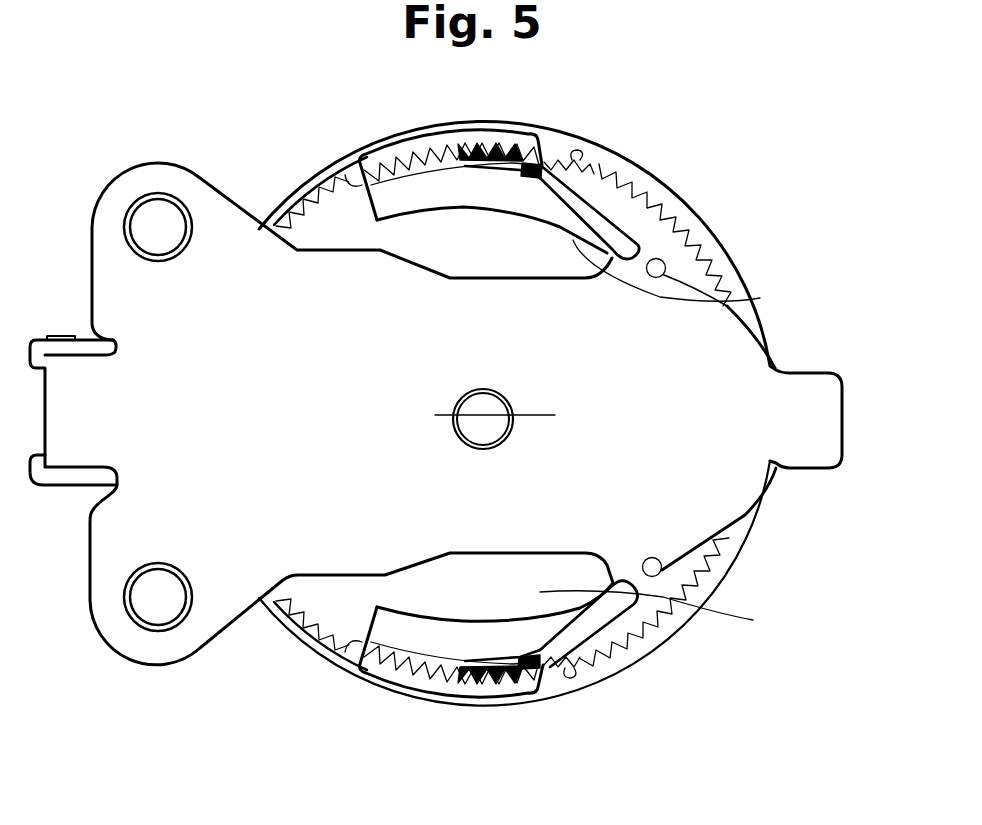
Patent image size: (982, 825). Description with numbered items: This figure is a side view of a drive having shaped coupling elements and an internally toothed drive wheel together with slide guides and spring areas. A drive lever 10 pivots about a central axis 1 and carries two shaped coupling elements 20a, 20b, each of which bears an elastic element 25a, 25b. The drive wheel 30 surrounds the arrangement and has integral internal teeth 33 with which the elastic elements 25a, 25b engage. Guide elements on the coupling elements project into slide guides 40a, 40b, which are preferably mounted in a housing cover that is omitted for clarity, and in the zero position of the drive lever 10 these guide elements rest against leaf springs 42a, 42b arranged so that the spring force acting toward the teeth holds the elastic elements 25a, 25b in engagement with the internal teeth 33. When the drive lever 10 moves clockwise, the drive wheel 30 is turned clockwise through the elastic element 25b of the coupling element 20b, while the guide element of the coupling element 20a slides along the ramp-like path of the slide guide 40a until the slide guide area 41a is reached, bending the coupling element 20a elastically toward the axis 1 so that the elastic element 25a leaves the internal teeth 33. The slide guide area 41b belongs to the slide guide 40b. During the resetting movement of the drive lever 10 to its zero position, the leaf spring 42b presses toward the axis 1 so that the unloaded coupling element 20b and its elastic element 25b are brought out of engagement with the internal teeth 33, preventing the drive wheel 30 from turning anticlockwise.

The axis 1 is at (463, 438).
The drive lever 10 is at (245, 297).
The drive wheel 30 is at (313, 180).
The internal teeth 33 is at (290, 222).
The coupling element 20a is at (623, 226).
The coupling element 20b is at (585, 642).
The elastic element 25a is at (477, 150).
The elastic element 25b is at (470, 683).
The slide guide 40a is at (760, 298).
The slide guide 40b is at (753, 620).
The slide guide area 41a is at (591, 188).
The slide guide area 41b is at (583, 648).
The leaf spring 42a is at (395, 190).
The leaf spring 42b is at (397, 650).